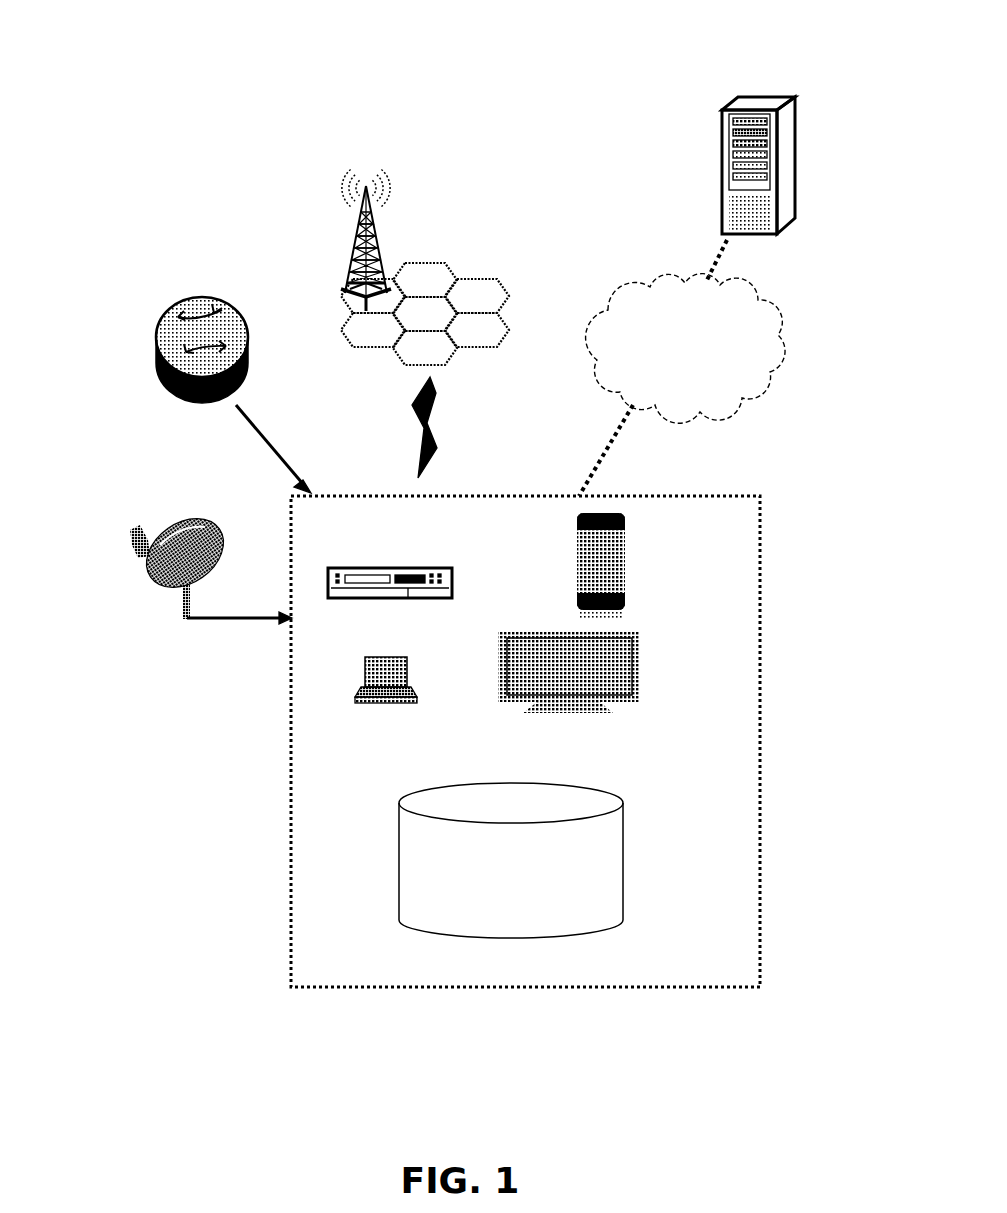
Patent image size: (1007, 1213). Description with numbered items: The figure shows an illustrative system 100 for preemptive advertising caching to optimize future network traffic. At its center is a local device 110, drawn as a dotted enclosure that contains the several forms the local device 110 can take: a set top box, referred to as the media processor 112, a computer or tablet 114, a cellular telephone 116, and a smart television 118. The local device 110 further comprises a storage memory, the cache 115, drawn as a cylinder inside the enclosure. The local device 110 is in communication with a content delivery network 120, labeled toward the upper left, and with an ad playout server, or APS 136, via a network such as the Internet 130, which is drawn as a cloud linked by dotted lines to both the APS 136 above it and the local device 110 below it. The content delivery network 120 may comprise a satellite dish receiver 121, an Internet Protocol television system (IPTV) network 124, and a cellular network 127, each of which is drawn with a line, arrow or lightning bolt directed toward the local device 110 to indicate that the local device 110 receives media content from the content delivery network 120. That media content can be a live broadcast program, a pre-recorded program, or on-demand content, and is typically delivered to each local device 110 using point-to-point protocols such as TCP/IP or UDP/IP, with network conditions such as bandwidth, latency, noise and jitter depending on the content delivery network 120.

The system 100 is at (492, 1153).
The local device 110 is at (763, 668).
The media processor 112 is at (453, 583).
The computer or tablet 114 is at (407, 678).
The cache 115 is at (508, 783).
The cellular telephone 116 is at (627, 587).
The smart television 118 is at (642, 688).
The content delivery network 120 is at (146, 222).
The satellite dish receiver 121 is at (133, 572).
The Internet Protocol television system (IPTV) network 124 is at (155, 348).
The cellular network 127 is at (423, 267).
The Internet 130 is at (758, 302).
The ad playout server (APS) 136 is at (763, 88).